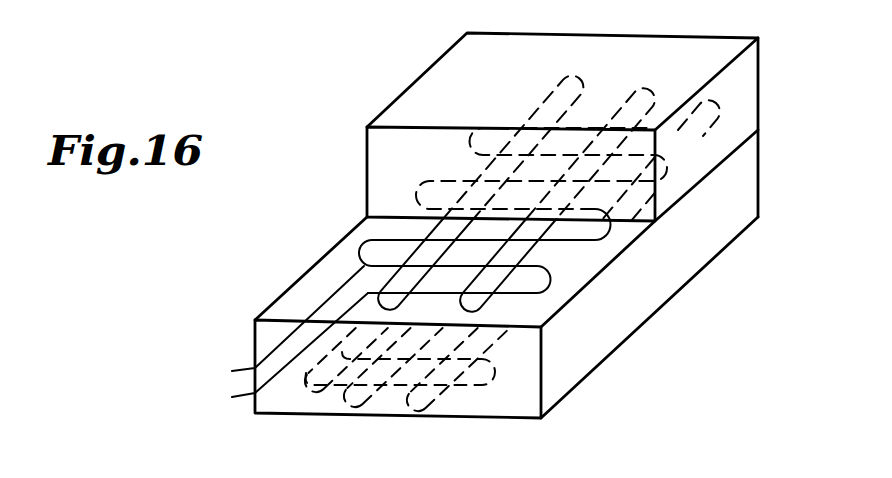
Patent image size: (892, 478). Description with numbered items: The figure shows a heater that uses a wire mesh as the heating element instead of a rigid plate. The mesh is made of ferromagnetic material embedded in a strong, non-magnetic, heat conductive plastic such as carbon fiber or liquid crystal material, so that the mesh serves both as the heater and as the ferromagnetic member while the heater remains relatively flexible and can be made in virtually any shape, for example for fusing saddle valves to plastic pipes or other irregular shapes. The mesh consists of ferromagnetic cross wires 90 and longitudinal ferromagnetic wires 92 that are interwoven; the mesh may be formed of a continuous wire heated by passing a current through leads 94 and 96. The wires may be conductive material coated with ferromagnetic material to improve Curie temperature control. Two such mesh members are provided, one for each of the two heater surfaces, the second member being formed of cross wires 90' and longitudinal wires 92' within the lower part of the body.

The ferromagnetic cross wires 90 is at (456, 210).
The longitudinal ferromagnetic wires 92 is at (549, 201).
The lead 94 is at (243, 371).
The lead 96 is at (241, 399).
The cross wires of second member 90' is at (400, 406).
The longitudinal wires of second member 92' is at (407, 394).